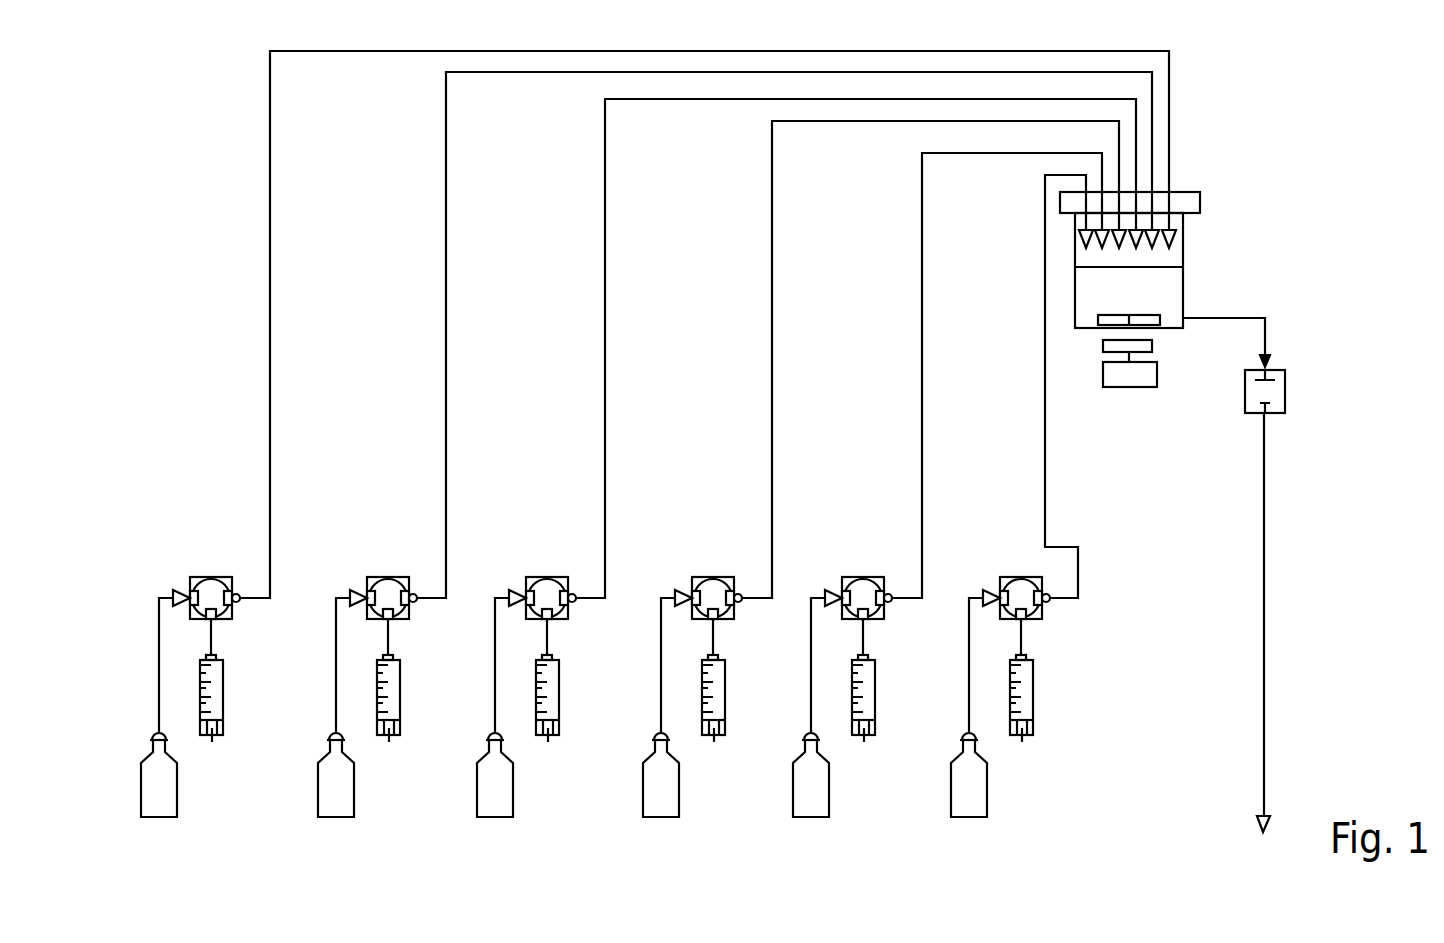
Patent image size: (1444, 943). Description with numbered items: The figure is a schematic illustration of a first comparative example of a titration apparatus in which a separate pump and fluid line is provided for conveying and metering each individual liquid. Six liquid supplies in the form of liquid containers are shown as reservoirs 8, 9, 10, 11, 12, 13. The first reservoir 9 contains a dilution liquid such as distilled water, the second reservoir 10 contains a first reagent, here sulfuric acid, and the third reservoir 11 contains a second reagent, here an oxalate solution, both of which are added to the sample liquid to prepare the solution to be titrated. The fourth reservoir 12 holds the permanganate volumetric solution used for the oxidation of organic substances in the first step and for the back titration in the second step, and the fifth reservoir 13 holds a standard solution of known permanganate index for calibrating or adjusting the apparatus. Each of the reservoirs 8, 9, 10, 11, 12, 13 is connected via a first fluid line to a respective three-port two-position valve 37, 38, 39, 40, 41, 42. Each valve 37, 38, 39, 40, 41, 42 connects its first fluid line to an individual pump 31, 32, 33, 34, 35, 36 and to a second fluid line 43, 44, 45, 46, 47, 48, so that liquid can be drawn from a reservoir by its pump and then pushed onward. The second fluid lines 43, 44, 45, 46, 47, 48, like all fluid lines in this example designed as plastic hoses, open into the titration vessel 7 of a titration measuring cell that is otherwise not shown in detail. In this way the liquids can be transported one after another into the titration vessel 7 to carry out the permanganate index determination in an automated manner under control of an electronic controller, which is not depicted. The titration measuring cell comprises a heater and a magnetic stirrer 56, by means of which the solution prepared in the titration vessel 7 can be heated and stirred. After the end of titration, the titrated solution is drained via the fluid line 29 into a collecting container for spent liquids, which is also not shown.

The titration vessel 7 is at (1183, 288).
The reservoir 8 is at (338, 803).
The first reservoir 9 is at (497, 803).
The second reservoir 10 is at (813, 803).
The third reservoir 11 is at (663, 803).
The fourth reservoir 12 is at (971, 803).
The fifth reservoir 13 is at (161, 803).
The fluid line 29 is at (1264, 492).
The pump 31 is at (212, 742).
The pump 32 is at (389, 742).
The pump 33 is at (548, 742).
The pump 34 is at (714, 742).
The pump 35 is at (864, 742).
The pump 36 is at (1022, 742).
The 3/2-way valve 37 is at (210, 577).
The 3/2-way valve 38 is at (387, 577).
The 3/2-way valve 39 is at (546, 577).
The 3/2-way valve 40 is at (712, 577).
The 3/2-way valve 41 is at (862, 577).
The 3/2-way valve 42 is at (1020, 577).
The second fluid line 43 is at (270, 406).
The second fluid line 44 is at (446, 406).
The second fluid line 45 is at (605, 406).
The second fluid line 46 is at (772, 406).
The second fluid line 47 is at (922, 406).
The second fluid line 48 is at (1045, 406).
The magnetic stirrer 56 is at (1137, 400).